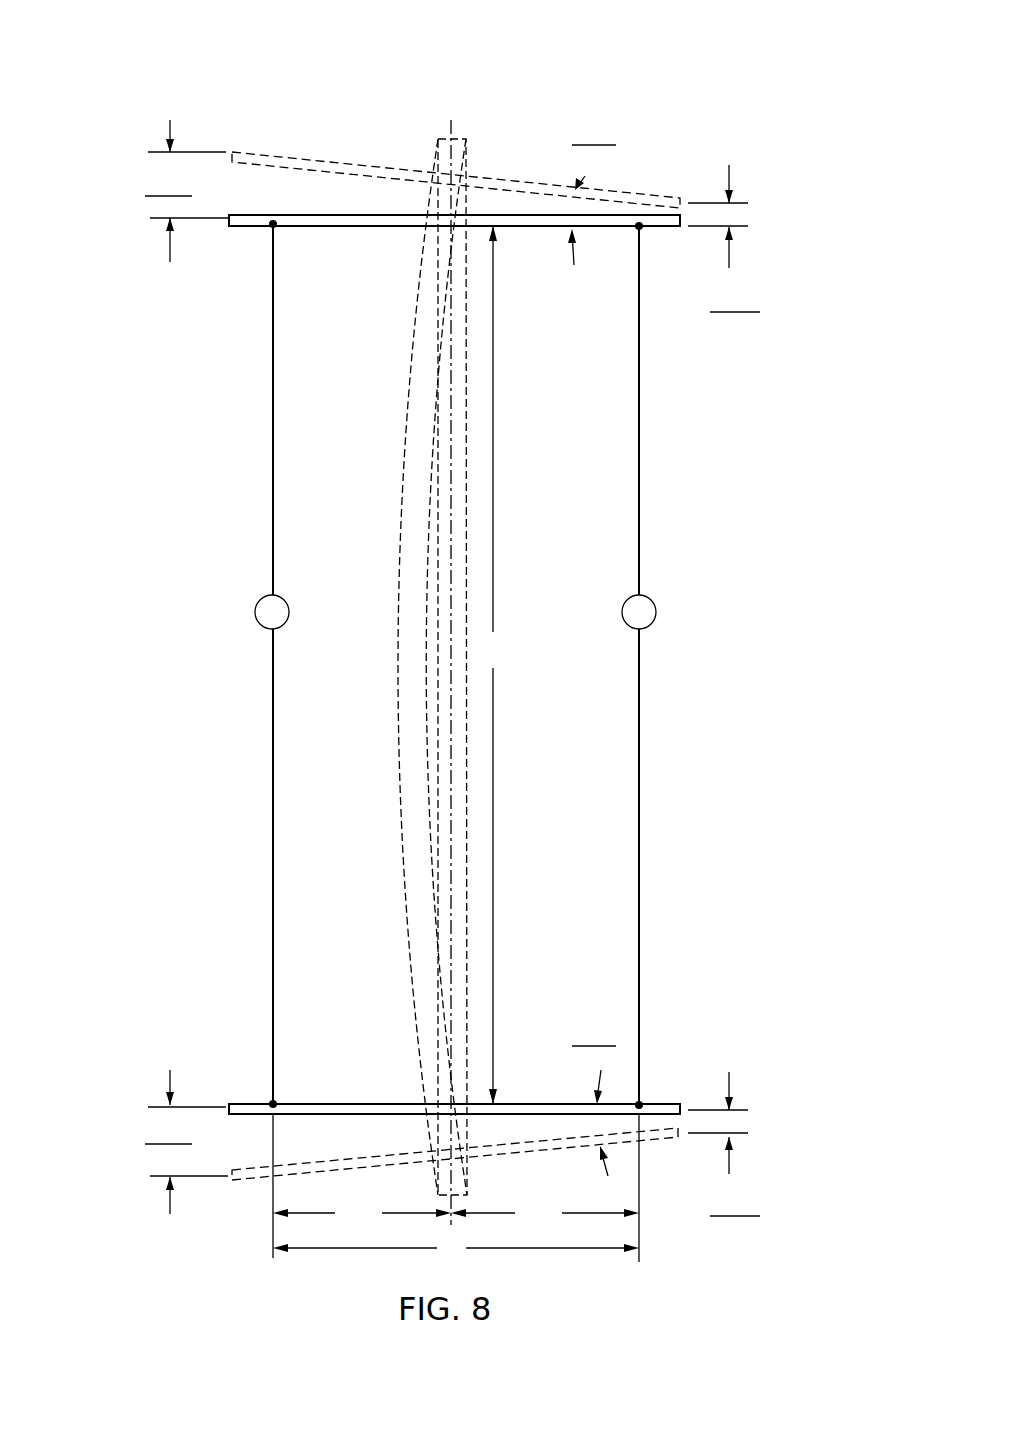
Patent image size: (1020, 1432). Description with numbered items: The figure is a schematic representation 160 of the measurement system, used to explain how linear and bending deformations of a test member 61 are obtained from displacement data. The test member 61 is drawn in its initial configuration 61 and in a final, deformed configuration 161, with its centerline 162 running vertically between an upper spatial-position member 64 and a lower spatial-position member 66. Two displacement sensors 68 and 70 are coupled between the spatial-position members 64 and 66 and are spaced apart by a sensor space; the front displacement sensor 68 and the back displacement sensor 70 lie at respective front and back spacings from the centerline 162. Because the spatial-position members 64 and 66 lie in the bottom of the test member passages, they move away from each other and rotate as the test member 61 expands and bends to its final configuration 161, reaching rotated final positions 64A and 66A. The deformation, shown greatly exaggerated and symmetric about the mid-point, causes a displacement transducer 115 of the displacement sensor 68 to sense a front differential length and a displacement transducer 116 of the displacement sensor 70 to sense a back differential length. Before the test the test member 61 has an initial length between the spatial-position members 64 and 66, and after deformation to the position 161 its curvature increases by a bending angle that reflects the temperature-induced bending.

The schematic representation 160 is at (666, 158).
The spatial-position member 64 is at (243, 227).
The final position of spatial-position member 64A is at (273, 153).
The spatial-position member 66 is at (243, 1103).
The final position of spatial-position member 66A is at (243, 1181).
The displacement sensor 68 is at (260, 518).
The displacement sensor 70 is at (652, 518).
The displacement transducer 115 is at (288, 605).
The displacement transducer 116 is at (656, 605).
The test member 61 is at (463, 860).
The final deformed configuration 161 is at (398, 875).
The centerline 162 is at (451, 468).